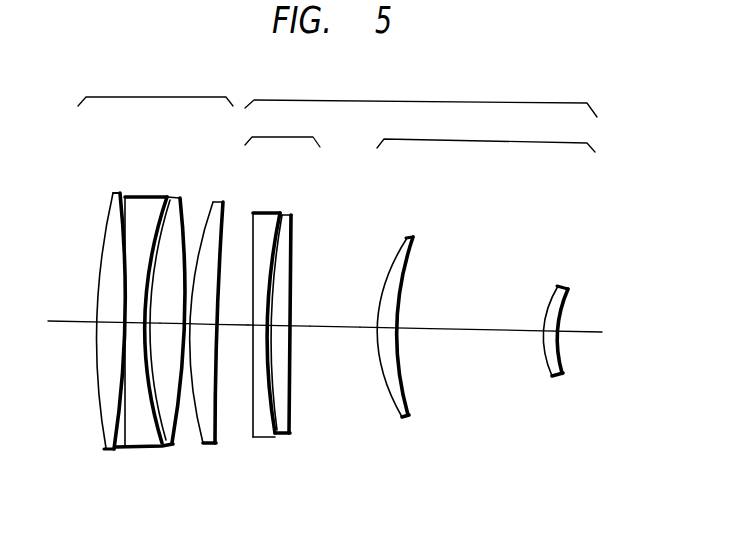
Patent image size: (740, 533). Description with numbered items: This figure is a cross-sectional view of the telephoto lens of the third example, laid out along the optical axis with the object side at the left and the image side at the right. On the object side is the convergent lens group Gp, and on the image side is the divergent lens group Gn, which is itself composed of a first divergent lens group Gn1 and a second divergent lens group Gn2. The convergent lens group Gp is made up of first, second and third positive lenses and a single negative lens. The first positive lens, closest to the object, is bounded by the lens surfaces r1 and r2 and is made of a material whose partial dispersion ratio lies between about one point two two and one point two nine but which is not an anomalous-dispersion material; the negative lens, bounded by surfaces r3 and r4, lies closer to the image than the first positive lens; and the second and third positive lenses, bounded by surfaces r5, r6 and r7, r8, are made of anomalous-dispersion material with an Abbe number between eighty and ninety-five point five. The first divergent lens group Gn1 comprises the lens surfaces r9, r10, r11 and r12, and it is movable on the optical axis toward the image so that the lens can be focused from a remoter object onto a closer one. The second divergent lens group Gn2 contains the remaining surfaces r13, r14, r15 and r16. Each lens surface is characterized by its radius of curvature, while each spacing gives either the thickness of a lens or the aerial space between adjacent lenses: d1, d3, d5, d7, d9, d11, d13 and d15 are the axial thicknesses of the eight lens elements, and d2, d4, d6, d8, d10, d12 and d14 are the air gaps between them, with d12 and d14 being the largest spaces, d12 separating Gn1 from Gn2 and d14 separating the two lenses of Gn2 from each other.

The convergent lens group Gp is at (155, 87).
The divergent lens group Gn is at (421, 95).
The first divergent lens group Gn1 is at (282, 129).
The second divergent lens group Gn2 is at (486, 135).
The first lens surface r1 is at (113, 193).
The second lens surface r2 is at (120, 193).
The third lens surface r3 is at (126, 197).
The fourth lens surface r4 is at (168, 197).
The fifth lens surface r5 is at (180, 198).
The sixth lens surface r6 is at (213, 202).
The seventh lens surface r7 is at (224, 202).
The eighth lens surface r8 is at (254, 213).
The ninth lens surface r9 is at (280, 213).
The tenth lens surface r10 is at (284, 215).
The eleventh lens surface r11 is at (292, 215).
The twelfth lens surface r12 is at (407, 238).
The thirteenth lens surface r13 is at (412, 237).
The fourteenth lens surface r14 is at (416, 237).
The fifteenth lens surface r15 is at (557, 286).
The sixteenth lens surface r16 is at (571, 289).
The thickness of first positive lens d1 is at (108, 322).
The aerial space between first positive lens and negative lens d2 is at (123, 323).
The thickness of negative lens d3 is at (132, 323).
The aerial space between negative lens and second positive lens d4 is at (142, 323).
The thickness of second positive lens d5 is at (160, 322).
The aerial space between second and third positive lenses d6 is at (200, 324).
The thickness of third positive lens d7 is at (212, 324).
The aerial space between convergent and divergent groups d8 is at (233, 325).
The thickness of first lens of first divergent group d9 is at (257, 325).
The aerial space within first divergent group d10 is at (272, 326).
The thickness of second lens of first divergent group d11 is at (285, 326).
The aerial space between first and second divergent groups d12 is at (333, 327).
The thickness of first lens of second divergent group d13 is at (387, 327).
The aerial space within second divergent group d14 is at (472, 329).
The thickness of last lens d15 is at (549, 334).